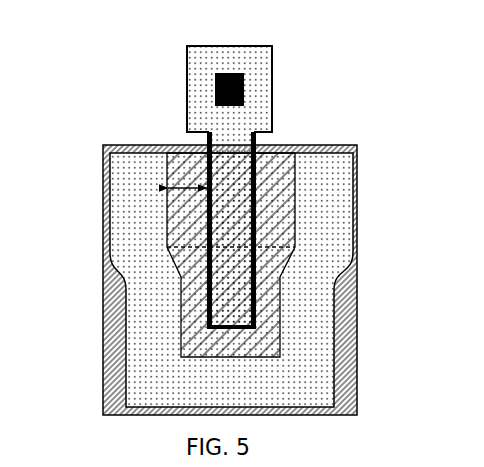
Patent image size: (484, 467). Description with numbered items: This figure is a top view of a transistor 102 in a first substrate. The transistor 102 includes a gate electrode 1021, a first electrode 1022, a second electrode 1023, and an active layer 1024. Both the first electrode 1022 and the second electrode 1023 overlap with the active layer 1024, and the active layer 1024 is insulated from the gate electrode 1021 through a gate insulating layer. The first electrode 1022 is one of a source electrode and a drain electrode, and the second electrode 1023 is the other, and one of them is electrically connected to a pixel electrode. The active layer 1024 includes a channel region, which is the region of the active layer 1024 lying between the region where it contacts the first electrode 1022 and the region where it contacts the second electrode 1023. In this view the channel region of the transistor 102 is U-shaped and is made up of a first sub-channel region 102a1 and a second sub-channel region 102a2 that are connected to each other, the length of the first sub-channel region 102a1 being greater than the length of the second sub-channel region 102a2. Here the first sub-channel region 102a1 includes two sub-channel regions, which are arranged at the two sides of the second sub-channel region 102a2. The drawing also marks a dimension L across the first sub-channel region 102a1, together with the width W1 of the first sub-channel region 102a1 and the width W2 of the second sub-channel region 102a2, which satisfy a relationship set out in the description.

The transistor 102 is at (57, 35).
The gate electrode 1021 is at (351, 375).
The first electrode 1022 is at (336, 235).
The second electrode 1023 is at (269, 70).
The active layer 1024 is at (276, 210).
The first sub-channel region 102a1 is at (178, 215).
The second sub-channel region 102a2 is at (197, 310).
The width L is at (190, 187).
The width of the first sub-channel region W1 is at (255, 172).
The width of the second sub-channel region W2 is at (253, 295).